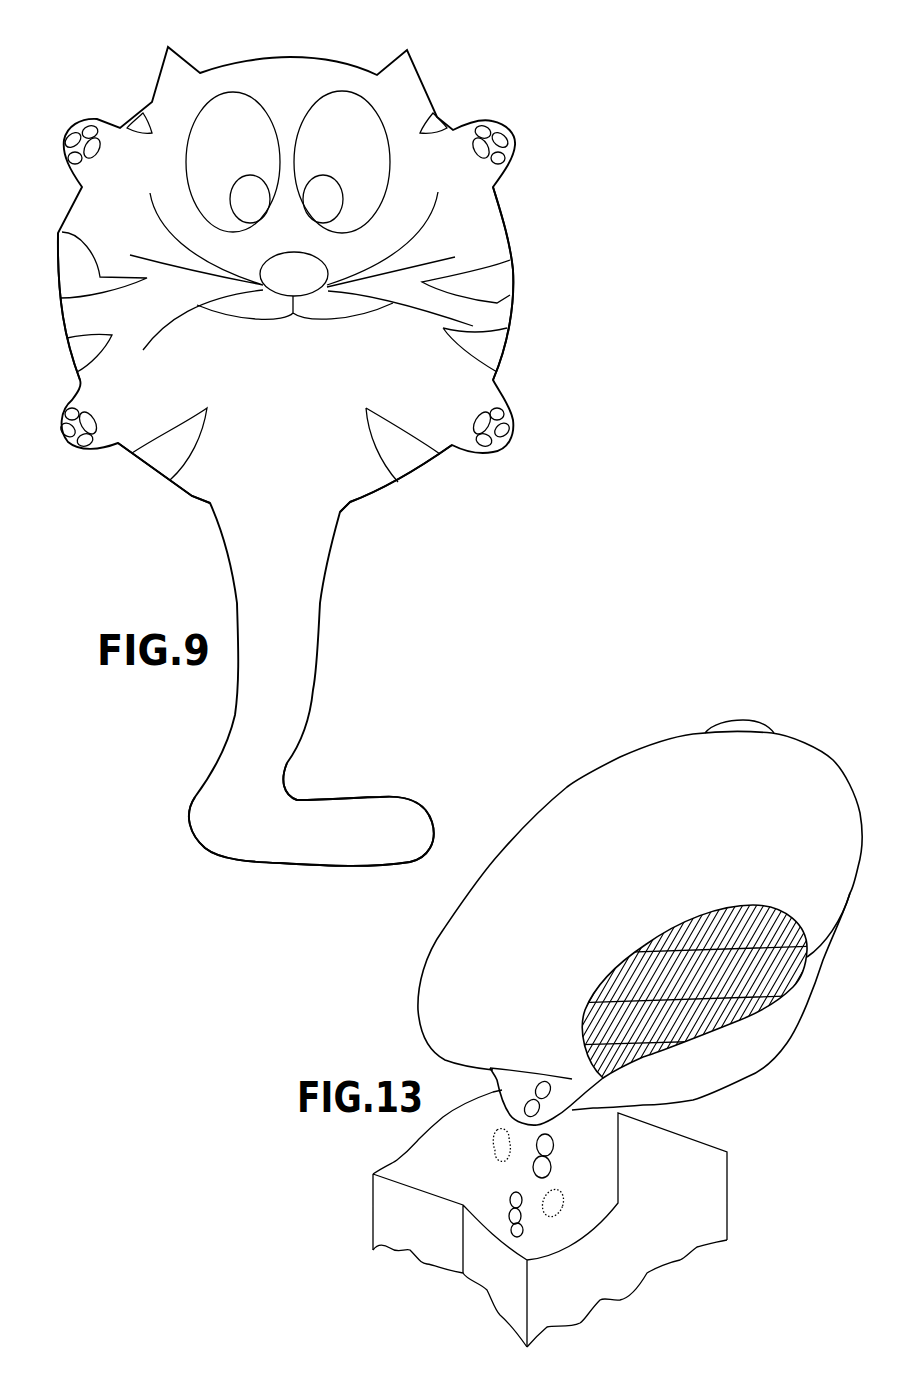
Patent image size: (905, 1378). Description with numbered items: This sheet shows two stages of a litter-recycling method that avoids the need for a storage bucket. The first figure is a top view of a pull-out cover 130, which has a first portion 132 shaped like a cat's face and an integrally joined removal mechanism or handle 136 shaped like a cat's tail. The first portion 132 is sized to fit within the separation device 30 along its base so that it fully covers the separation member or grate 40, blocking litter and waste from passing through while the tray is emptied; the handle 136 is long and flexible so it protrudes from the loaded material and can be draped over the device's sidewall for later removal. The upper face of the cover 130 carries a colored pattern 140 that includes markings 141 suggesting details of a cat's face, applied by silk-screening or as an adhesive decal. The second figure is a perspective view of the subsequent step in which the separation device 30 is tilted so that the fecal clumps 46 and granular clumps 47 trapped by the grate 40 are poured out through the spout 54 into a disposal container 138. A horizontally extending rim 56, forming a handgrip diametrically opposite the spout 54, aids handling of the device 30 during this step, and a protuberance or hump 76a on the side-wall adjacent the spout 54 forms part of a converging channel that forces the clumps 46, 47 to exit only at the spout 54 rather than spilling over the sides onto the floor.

In FIG. 9, the pull-out cover 130 is at (452, 93).
In FIG. 9, the markings 141 is at (230, 91).
In FIG. 9, the first portion 132 is at (481, 223).
In FIG. 9, the colored pattern 140 is at (183, 495).
In FIG. 9, the removal mechanism or handle 136 is at (357, 814).
In FIG. 13, the separation device 30 is at (600, 767).
In FIG. 13, the rim 56 is at (745, 720).
In FIG. 13, the separation member or grate 40 is at (686, 906).
In FIG. 13, the protuberance or hump 76a is at (518, 1069).
In FIG. 13, the disposal container 138 is at (728, 1180).
In FIG. 13, the spout 54 is at (497, 1109).
In FIG. 13, the fecal clumps 46 is at (552, 1167).
In FIG. 13, the granular clumps 47 is at (562, 1215).